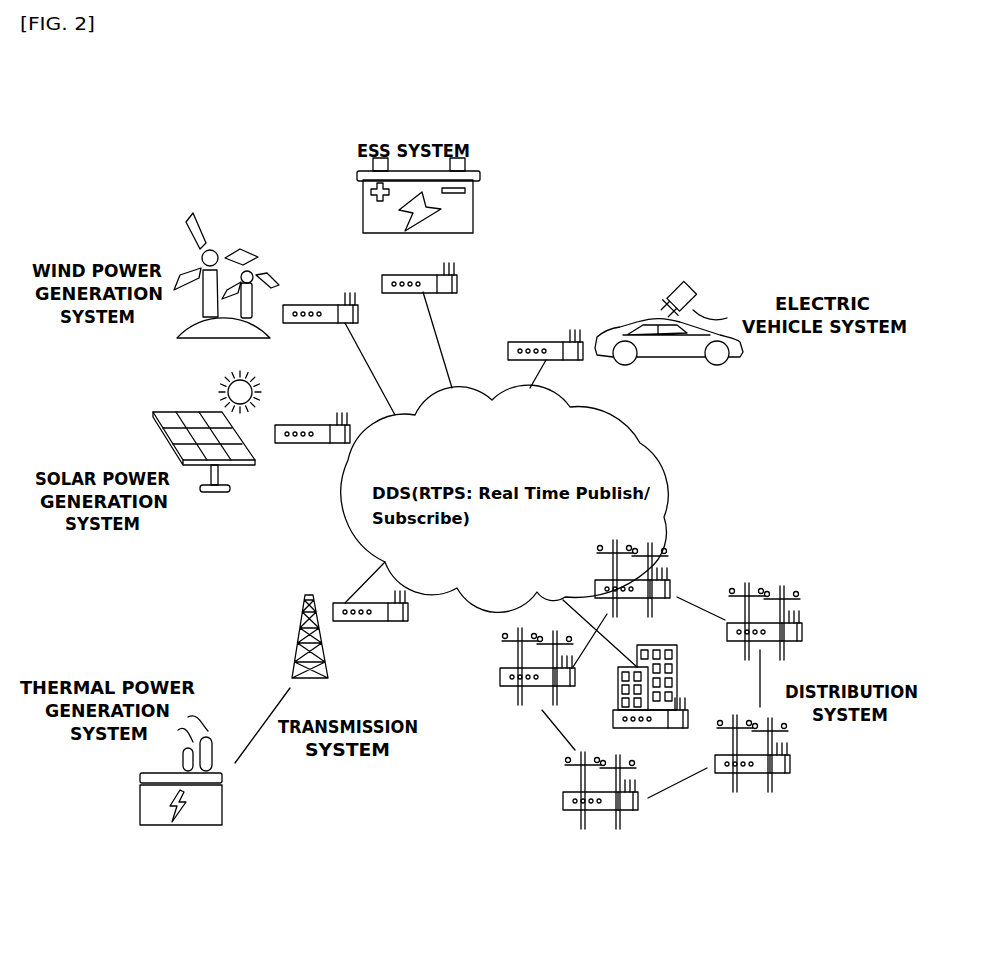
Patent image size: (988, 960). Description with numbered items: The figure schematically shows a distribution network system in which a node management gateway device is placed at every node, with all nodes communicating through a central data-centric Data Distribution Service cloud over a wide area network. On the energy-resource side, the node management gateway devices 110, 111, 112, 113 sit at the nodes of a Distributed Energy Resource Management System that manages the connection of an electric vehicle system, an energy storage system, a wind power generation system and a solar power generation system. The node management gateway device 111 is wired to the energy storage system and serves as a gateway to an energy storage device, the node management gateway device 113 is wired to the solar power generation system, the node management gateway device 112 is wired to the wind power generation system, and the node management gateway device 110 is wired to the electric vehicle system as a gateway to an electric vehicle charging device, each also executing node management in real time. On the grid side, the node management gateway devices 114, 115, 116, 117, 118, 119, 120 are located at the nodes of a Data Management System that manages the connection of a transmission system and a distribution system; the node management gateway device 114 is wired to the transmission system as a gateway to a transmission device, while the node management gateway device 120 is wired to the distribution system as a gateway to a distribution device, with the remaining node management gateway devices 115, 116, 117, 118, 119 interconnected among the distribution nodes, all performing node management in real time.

The node management gateway device 110 is at (541, 341).
The node management gateway device 111 is at (419, 274).
The node management gateway device 112 is at (320, 304).
The node management gateway device 113 is at (310, 424).
The node management gateway device 114 is at (372, 624).
The node management gateway device 115 is at (499, 677).
The node management gateway device 116 is at (672, 585).
The node management gateway device 117 is at (803, 633).
The node management gateway device 118 is at (791, 764).
The node management gateway device 119 is at (562, 800).
The node management gateway device 120 is at (655, 729).